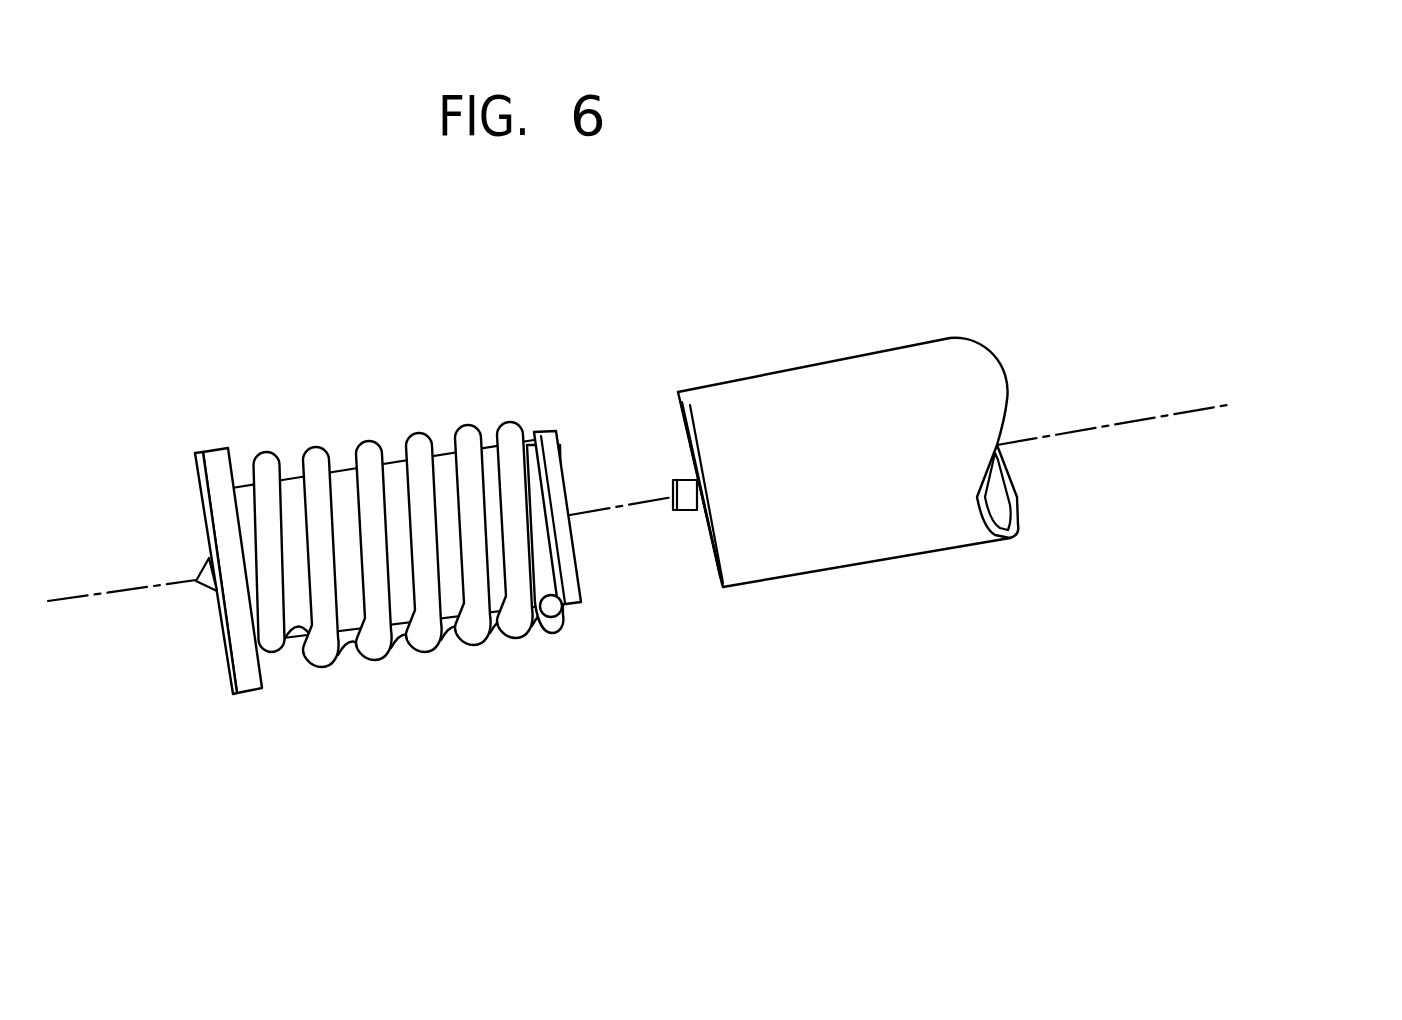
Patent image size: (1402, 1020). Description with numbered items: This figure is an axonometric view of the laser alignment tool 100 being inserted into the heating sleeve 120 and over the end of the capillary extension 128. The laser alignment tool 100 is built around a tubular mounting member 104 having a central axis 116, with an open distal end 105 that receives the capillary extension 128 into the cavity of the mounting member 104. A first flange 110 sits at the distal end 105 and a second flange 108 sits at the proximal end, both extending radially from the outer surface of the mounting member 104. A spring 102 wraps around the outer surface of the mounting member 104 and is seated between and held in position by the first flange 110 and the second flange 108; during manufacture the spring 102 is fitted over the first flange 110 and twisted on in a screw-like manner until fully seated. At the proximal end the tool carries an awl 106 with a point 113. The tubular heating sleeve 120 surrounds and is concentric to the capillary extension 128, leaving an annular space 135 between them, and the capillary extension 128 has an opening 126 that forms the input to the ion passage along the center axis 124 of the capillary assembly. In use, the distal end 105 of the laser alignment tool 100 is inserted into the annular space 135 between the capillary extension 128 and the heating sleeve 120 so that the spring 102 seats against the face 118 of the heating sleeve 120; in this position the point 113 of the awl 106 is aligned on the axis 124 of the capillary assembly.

The laser alignment tool 100 is at (227, 673).
The spring 102 is at (527, 620).
The mounting member 104 is at (450, 590).
The distal end 105 is at (580, 563).
The awl 106 is at (207, 560).
The second flange 108 is at (213, 458).
The first flange 110 is at (543, 437).
The point 113 is at (195, 582).
The central axis 116 is at (1138, 418).
The face 118 is at (720, 585).
The heating sleeve 120 is at (728, 418).
The center axis 124 is at (1191, 376).
The opening 126 is at (673, 488).
The capillary extension 128 is at (692, 502).
The annular space 135 is at (677, 407).